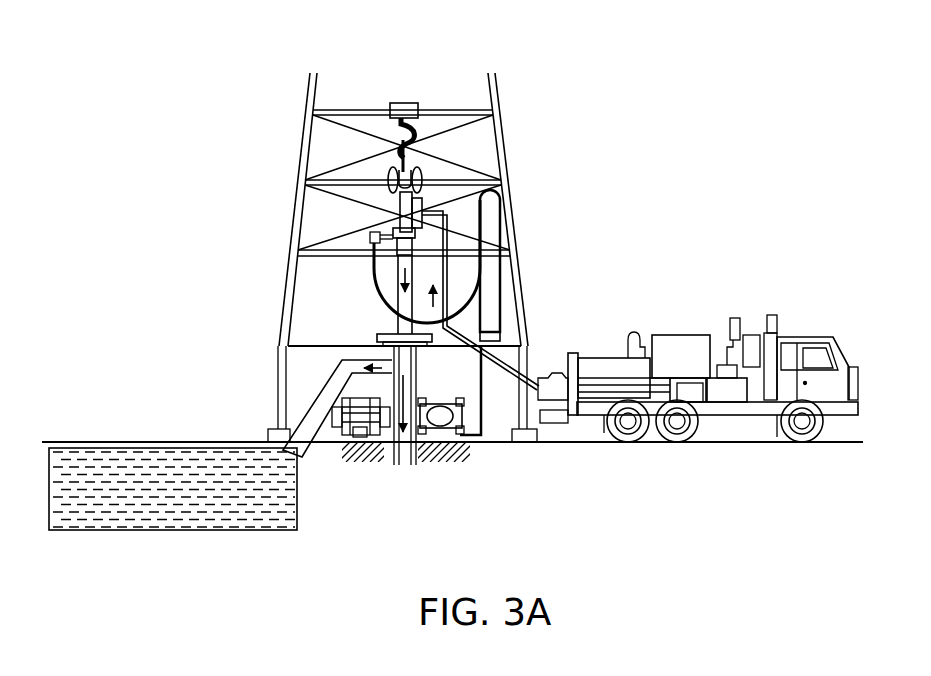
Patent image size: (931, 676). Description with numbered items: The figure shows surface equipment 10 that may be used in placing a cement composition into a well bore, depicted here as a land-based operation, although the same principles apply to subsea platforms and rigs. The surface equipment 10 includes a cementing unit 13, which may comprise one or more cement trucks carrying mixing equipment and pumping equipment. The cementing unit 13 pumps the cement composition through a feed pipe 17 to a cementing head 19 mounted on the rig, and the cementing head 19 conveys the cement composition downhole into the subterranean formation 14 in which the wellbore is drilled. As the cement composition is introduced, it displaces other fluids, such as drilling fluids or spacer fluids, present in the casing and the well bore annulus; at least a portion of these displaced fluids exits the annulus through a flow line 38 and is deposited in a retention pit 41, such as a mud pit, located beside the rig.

The surface equipment 10 is at (680, 103).
The cementing unit 13 is at (722, 424).
The subterranean formation 14 is at (372, 300).
The feed pipe 17 is at (508, 352).
The cementing head 19 is at (448, 171).
The flow line 38 is at (315, 402).
The retention pit 41 is at (227, 530).